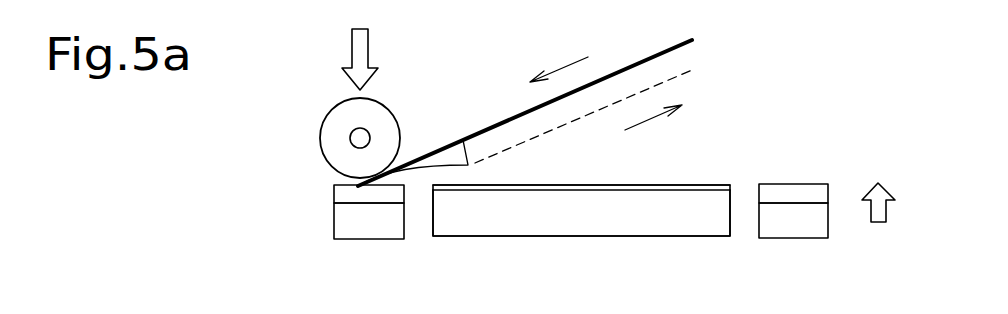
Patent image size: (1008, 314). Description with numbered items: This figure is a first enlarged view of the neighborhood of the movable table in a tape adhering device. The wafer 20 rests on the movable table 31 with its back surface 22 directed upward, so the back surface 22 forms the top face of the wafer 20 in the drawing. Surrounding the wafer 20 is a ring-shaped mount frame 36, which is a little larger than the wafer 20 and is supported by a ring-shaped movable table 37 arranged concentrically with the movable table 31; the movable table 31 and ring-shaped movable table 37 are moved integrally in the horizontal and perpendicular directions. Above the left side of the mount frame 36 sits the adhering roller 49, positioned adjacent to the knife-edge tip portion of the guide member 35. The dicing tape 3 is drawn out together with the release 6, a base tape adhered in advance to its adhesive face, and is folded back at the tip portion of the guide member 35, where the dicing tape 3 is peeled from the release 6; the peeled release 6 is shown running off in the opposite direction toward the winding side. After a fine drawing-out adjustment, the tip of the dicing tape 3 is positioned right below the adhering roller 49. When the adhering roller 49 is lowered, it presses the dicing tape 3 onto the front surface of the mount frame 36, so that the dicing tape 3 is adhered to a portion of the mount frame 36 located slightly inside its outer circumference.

The dicing tape 3 is at (668, 47).
The release 6 is at (670, 80).
The wafer 20 is at (697, 189).
The back surface 22 is at (657, 184).
The movable table 31 is at (616, 222).
The guide member 35 is at (450, 158).
The mount frame 36 is at (341, 195).
The ring-shaped movable table 37 is at (378, 226).
The adhering roller 49 is at (332, 128).